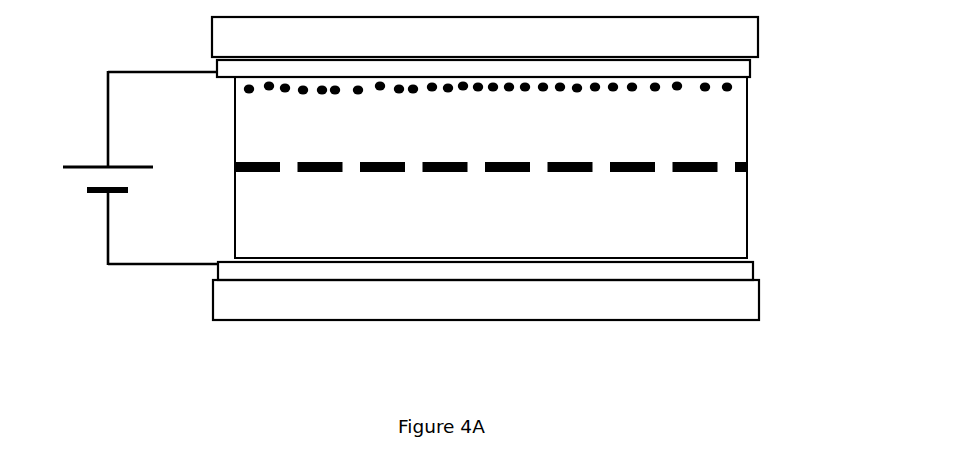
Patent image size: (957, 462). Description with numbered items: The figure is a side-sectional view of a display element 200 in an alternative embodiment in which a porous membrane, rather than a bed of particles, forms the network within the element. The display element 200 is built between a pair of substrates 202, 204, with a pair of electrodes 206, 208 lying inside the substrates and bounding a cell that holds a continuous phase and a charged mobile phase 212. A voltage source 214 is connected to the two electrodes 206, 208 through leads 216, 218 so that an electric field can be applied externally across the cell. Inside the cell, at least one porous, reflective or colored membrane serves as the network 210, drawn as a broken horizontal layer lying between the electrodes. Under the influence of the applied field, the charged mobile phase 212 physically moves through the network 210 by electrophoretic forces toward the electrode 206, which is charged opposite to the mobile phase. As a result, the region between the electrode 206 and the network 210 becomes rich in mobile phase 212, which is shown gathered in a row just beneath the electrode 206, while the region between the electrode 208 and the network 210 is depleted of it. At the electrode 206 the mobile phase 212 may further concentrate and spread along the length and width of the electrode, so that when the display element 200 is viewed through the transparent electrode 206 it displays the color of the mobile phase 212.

The display element 200 is at (520, 202).
The substrate 202 is at (758, 34).
The substrate 204 is at (759, 304).
The electrode 206 is at (750, 69).
The electrode 208 is at (753, 273).
The network 210 is at (523, 172).
The mobile phase 212 is at (675, 93).
The voltage source 214 is at (95, 165).
The lead 216 is at (148, 72).
The lead 218 is at (153, 267).